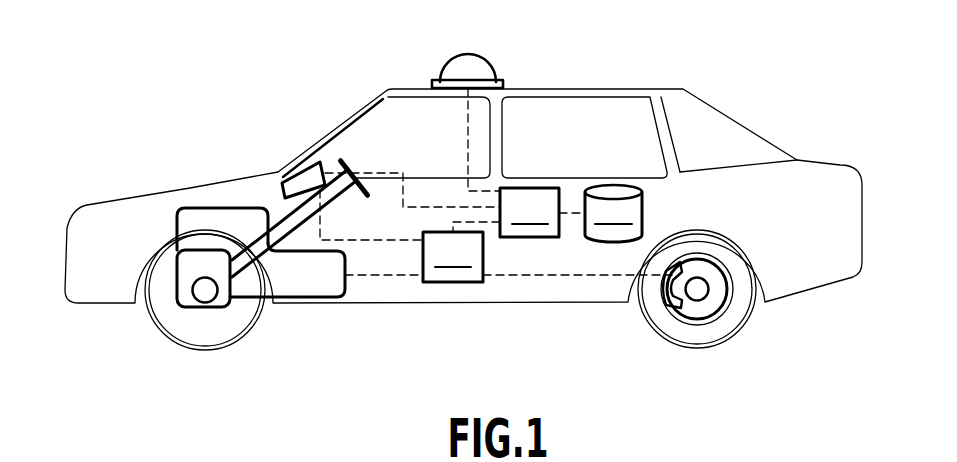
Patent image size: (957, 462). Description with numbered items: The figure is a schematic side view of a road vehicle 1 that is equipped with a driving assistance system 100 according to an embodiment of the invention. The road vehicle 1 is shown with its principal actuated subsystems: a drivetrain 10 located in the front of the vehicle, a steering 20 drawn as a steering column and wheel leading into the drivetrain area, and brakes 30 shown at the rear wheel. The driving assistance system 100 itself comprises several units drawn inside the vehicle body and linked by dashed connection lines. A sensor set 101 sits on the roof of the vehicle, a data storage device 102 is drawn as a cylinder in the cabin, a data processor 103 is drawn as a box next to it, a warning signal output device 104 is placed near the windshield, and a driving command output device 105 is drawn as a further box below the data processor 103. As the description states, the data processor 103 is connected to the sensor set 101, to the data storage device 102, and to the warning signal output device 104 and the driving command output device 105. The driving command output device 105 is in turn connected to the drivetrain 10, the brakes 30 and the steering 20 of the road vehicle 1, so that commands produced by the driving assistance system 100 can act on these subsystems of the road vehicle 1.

The road vehicle 1 is at (827, 172).
The drivetrain 10 is at (307, 285).
The steering 20 is at (287, 230).
The brakes 30 is at (668, 297).
The driving assistance system 100 is at (533, 157).
The sensor set 101 is at (477, 68).
The data storage device 102 is at (613, 213).
The data processor 103 is at (529, 212).
The warning signal output device 104 is at (307, 175).
The driving command output device 105 is at (453, 257).